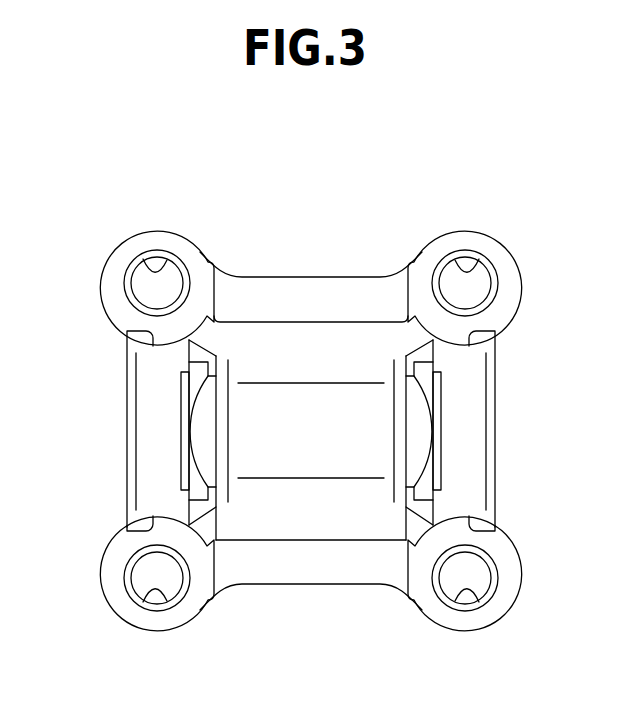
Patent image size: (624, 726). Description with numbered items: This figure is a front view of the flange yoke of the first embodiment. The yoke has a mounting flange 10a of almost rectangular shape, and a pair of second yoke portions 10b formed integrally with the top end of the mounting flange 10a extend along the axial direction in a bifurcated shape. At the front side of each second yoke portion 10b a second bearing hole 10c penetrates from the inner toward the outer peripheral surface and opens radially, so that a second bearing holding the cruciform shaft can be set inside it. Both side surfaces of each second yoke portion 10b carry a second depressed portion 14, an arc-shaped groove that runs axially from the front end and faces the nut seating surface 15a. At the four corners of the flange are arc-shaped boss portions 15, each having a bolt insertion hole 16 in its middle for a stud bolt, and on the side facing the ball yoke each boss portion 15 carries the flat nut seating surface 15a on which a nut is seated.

The mounting flange 10a is at (296, 572).
The second yoke portion 10b is at (150, 413).
The second bearing hole 10c is at (135, 447).
The second depressed portion 14 is at (125, 335).
The boss portion 15 is at (105, 266).
The nut seating surface 15a is at (178, 246).
The bolt insertion hole 16 is at (143, 263).